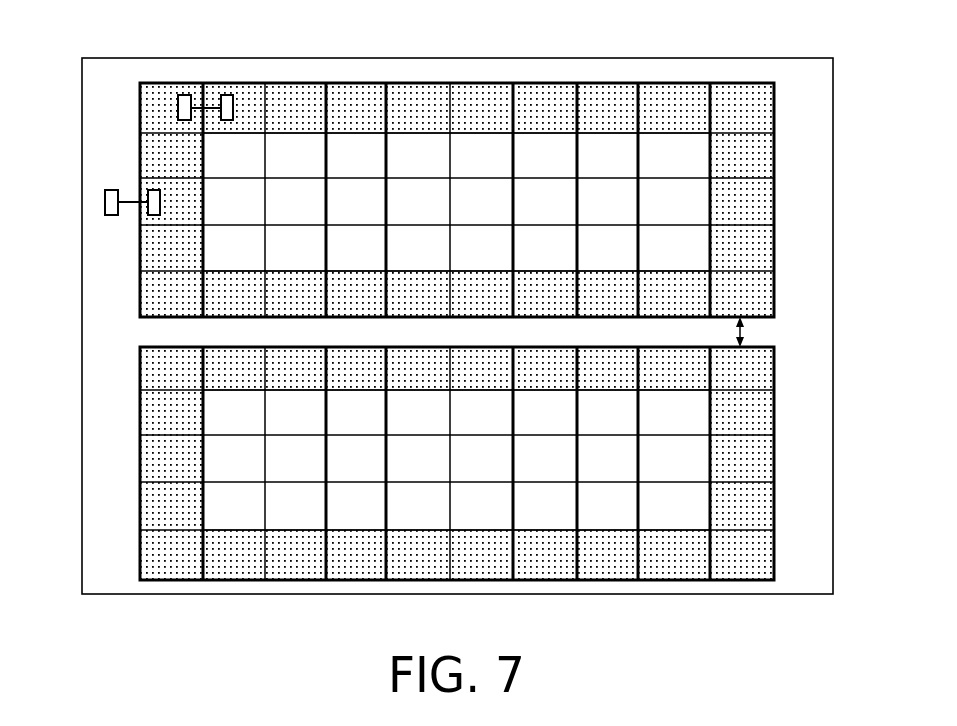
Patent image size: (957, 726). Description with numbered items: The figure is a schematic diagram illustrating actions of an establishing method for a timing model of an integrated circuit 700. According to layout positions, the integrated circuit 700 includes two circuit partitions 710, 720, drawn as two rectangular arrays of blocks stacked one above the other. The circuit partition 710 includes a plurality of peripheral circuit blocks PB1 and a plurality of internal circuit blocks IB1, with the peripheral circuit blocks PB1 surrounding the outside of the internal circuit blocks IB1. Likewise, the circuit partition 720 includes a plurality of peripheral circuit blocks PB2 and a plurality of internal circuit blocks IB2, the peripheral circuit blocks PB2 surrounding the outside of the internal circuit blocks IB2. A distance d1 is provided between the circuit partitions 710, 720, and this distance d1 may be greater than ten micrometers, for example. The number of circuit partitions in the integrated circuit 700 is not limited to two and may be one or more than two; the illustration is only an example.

The integrated circuit 700 is at (833, 498).
The circuit partition 710 is at (496, 162).
The circuit partition 720 is at (461, 491).
The peripheral circuit blocks PB1 is at (165, 97).
The internal circuit blocks IB1 is at (240, 150).
The peripheral circuit blocks PB2 is at (163, 367).
The internal circuit blocks IB2 is at (700, 415).
The distance d1 is at (742, 332).